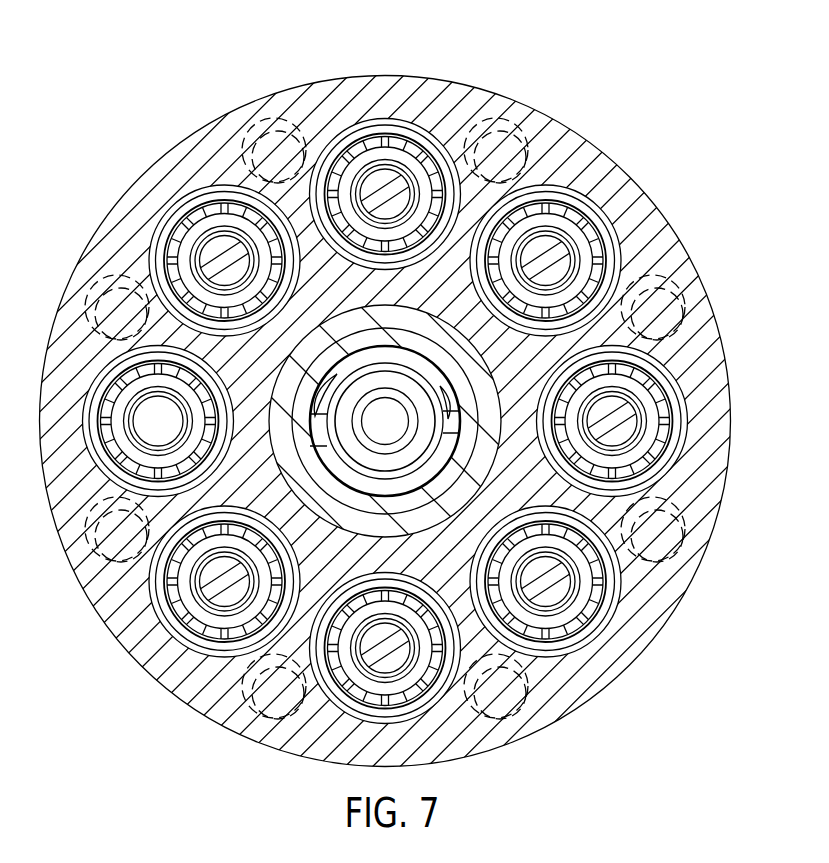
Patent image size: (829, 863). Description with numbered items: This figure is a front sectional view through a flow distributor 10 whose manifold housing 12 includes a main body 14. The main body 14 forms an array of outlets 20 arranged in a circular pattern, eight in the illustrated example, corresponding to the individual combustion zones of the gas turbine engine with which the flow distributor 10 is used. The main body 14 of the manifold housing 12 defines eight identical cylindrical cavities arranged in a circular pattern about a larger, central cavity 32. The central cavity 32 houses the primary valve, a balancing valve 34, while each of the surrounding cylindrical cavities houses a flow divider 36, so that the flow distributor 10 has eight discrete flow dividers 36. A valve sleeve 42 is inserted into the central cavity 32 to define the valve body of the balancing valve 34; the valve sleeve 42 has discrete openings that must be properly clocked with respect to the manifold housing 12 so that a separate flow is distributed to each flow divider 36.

The flow distributor 10 is at (577, 123).
The manifold housing 12 is at (662, 207).
The main body 14 is at (667, 247).
The outlets 20 is at (290, 118).
The central cavity 32 is at (492, 375).
The balancing valve 34 is at (433, 485).
The flow dividers 36 is at (400, 156).
The valve sleeve 42 is at (397, 318).